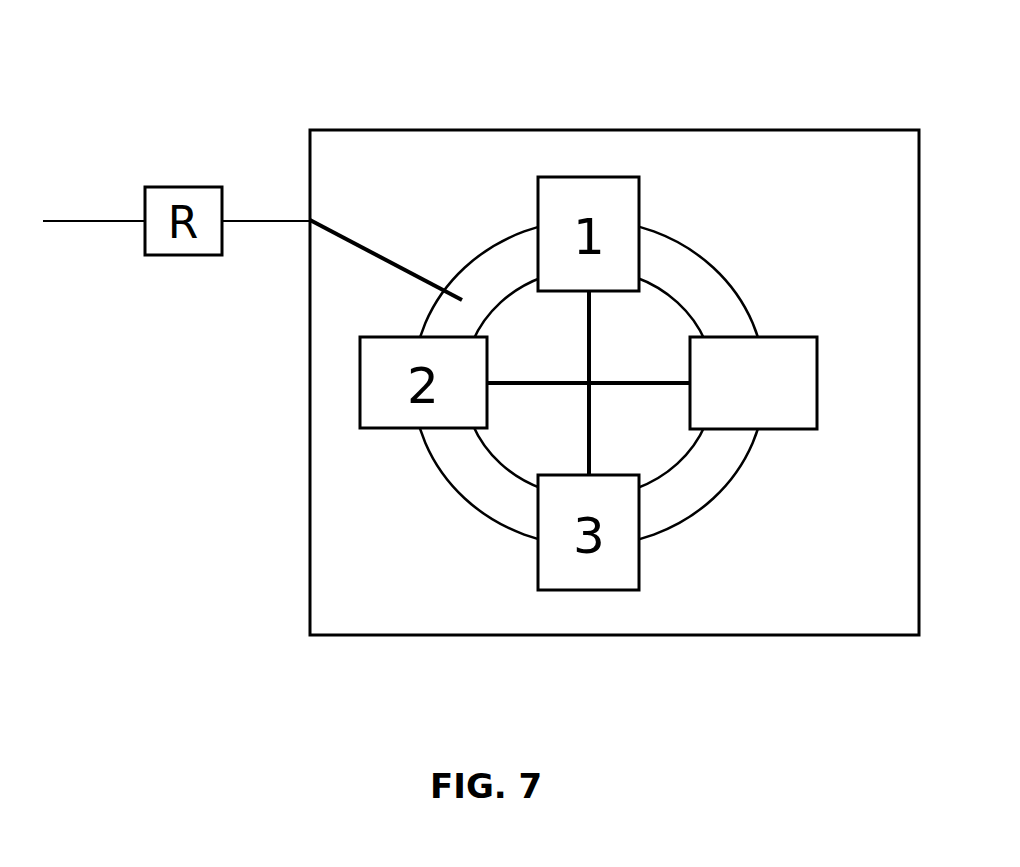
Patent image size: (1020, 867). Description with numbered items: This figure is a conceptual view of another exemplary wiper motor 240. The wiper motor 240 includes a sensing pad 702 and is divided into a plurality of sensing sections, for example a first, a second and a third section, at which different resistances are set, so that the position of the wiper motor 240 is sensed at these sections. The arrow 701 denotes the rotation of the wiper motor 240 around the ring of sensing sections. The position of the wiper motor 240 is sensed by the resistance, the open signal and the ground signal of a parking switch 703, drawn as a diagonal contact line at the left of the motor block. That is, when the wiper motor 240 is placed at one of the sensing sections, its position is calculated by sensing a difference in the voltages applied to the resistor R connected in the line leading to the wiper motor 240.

The wiper motor 240 is at (488, 130).
The rotation of the wiper motor 701 is at (680, 246).
The sensing pad 702 is at (783, 337).
The parking switch 703 is at (366, 273).